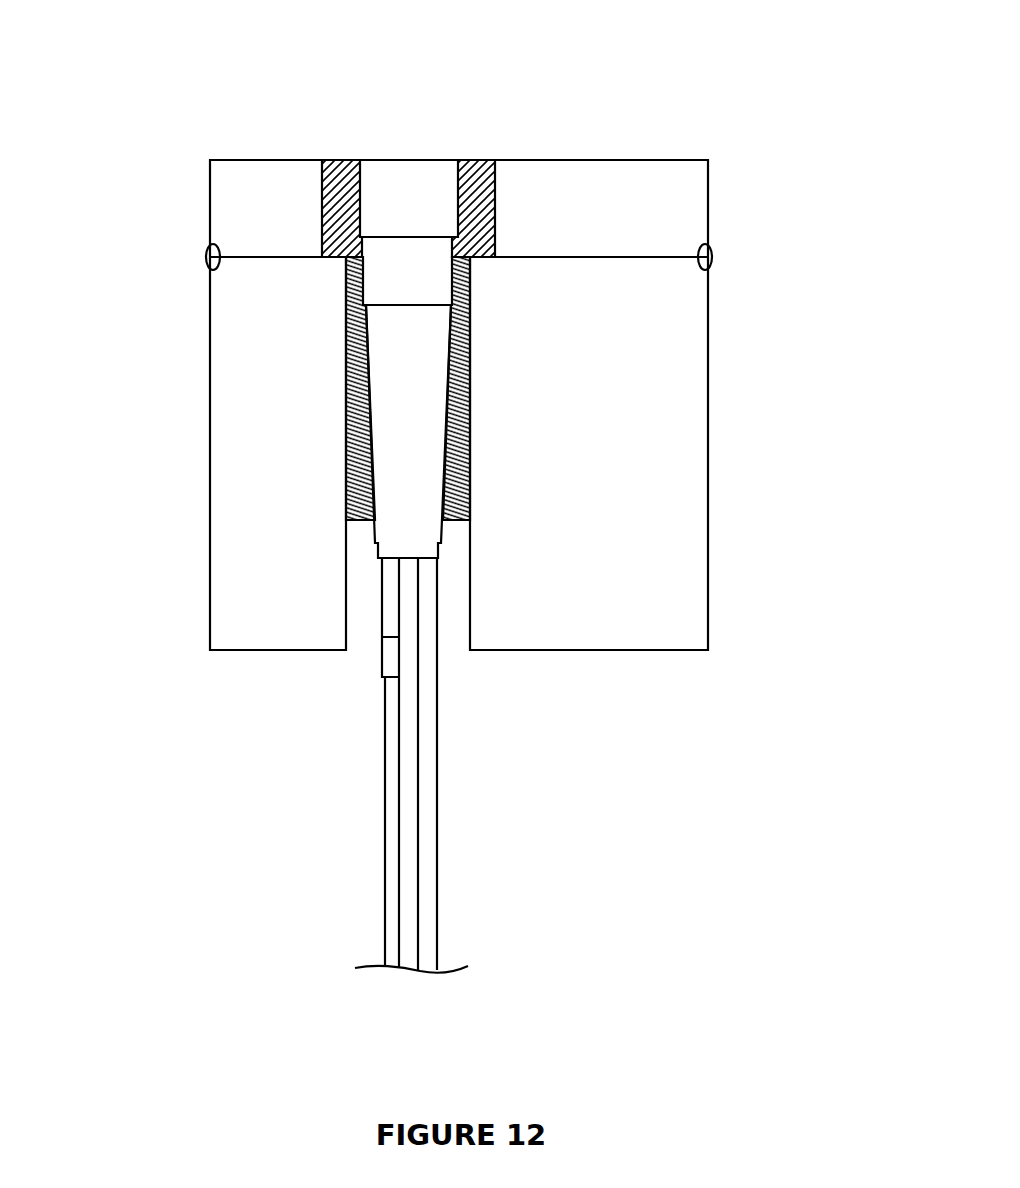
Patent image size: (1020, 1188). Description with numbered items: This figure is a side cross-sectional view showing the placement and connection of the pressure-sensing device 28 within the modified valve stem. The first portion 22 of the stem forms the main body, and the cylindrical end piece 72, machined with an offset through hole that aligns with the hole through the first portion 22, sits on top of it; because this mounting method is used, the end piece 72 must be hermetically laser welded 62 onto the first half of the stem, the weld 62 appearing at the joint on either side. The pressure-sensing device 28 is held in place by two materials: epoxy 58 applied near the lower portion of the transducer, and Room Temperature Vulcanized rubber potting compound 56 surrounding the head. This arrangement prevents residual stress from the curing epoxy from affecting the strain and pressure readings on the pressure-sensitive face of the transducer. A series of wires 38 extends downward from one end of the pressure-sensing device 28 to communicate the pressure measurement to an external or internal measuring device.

The first portion 22 is at (600, 355).
The pressure-sensing device 28 is at (410, 508).
The wires 38 is at (407, 795).
The Room Temperature Vulcanized rubber potting compound 56 is at (337, 216).
The epoxy 58 is at (358, 423).
The hermetic laser weld 62 is at (207, 257).
The cylindrical end piece 72 is at (687, 198).